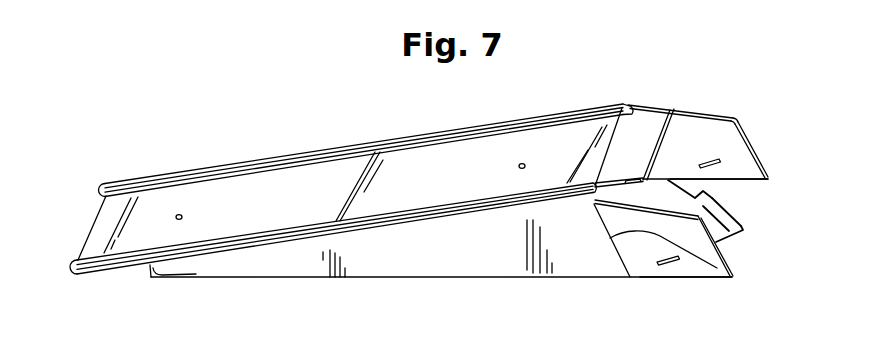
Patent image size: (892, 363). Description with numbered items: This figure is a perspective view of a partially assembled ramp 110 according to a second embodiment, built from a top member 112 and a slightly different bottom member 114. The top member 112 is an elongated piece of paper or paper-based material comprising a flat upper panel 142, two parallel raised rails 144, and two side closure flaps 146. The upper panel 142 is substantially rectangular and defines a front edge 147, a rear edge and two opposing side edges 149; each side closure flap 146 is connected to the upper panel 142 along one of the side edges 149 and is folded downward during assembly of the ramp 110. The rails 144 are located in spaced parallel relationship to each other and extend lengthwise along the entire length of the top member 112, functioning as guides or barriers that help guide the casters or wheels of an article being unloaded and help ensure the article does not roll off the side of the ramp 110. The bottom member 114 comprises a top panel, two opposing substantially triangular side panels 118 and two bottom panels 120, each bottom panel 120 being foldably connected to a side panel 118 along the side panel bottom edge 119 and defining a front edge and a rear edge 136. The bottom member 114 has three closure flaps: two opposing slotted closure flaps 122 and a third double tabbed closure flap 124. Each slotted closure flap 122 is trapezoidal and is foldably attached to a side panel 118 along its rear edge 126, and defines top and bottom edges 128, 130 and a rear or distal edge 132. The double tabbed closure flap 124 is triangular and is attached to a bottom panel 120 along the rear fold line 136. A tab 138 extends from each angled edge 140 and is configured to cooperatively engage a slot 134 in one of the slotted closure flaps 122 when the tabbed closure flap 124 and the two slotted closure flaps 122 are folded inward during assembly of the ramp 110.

The ramp 110 is at (172, 148).
The top member 112 is at (266, 198).
The bottom member 114 is at (491, 253).
The side panel 118 is at (293, 270).
The side panel bottom edge 119 is at (513, 278).
The bottom panel 120 is at (661, 205).
The slotted closure flap 122 is at (741, 146).
The double tabbed closure flap 124 is at (726, 230).
The rear edge 126 is at (722, 262).
The top edge 128 is at (655, 103).
The bottom edge 130 is at (768, 181).
The distal edge 132 is at (738, 121).
The slot 134 is at (703, 160).
The rear fold line 136 is at (658, 206).
The tab 138 is at (712, 193).
The angled edge 140 is at (745, 231).
The upper panel 142 is at (385, 182).
The raised rail 144 is at (557, 186).
The side closure flap 146 is at (382, 239).
The front edge 147 is at (90, 230).
The side edge 149 is at (199, 268).